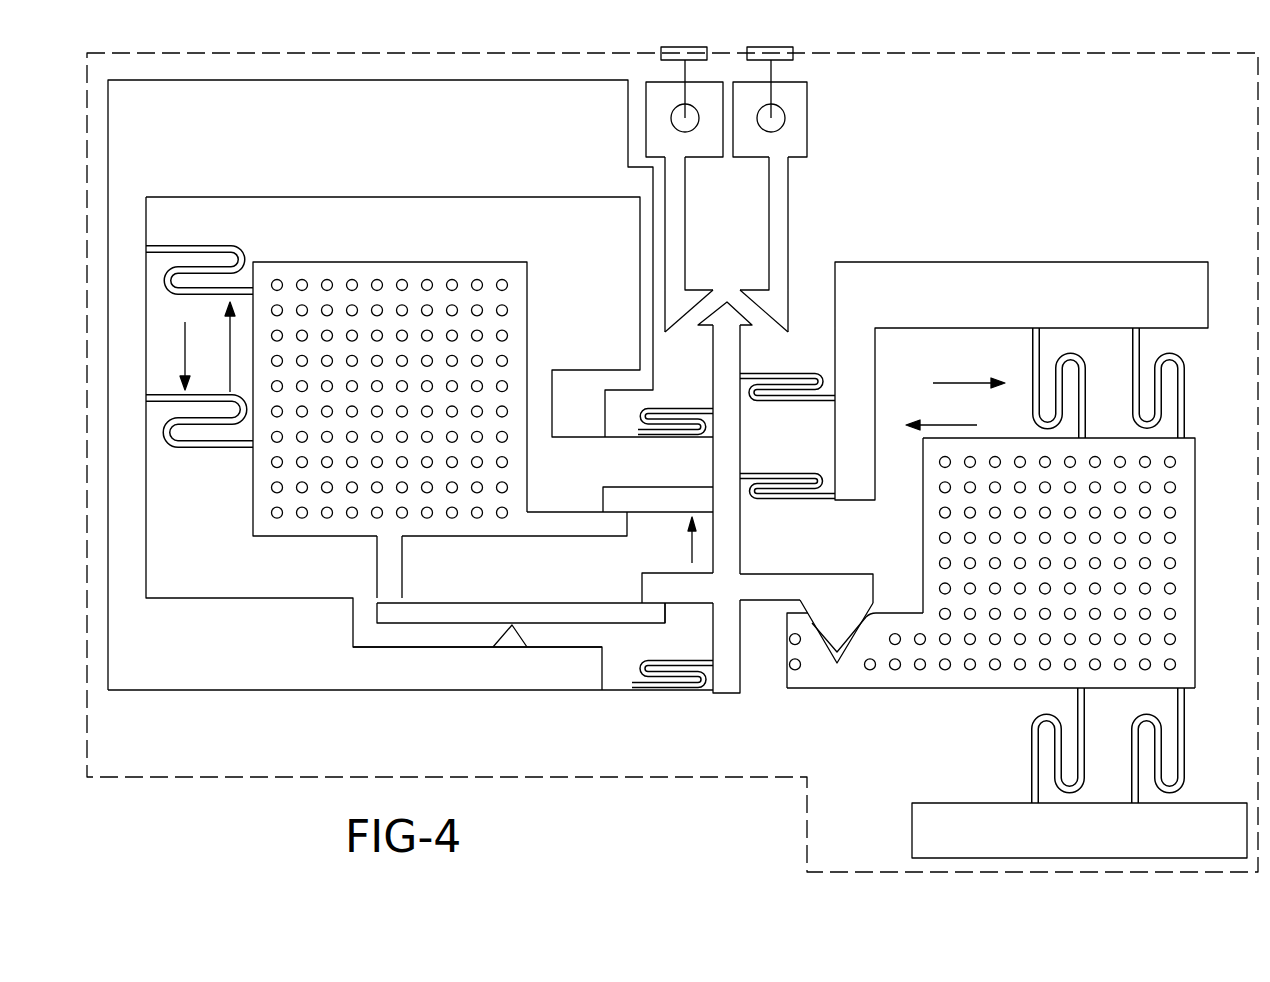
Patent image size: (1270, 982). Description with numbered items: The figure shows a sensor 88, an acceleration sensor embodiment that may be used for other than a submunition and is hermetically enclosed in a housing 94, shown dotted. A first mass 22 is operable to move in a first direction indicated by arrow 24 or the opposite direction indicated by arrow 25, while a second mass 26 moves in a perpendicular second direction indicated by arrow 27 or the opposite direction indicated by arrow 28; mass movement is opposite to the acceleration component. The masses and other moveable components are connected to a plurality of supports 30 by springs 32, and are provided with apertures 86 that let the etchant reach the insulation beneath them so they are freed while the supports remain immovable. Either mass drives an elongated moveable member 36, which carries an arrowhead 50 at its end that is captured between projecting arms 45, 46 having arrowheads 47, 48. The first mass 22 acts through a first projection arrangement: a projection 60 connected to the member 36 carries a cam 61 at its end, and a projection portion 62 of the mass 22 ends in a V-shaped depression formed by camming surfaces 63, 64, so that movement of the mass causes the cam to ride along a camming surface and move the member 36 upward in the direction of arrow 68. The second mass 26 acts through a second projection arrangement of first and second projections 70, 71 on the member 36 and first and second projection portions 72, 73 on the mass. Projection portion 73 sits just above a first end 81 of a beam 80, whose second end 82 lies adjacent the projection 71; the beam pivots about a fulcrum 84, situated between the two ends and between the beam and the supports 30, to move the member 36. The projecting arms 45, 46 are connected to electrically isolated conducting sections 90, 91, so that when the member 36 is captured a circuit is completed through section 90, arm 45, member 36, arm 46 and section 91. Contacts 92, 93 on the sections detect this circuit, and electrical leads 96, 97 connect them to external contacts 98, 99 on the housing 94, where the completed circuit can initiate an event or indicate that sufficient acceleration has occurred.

The first mass 22 is at (1201, 549).
The arrow 24 is at (960, 382).
The arrow 25 is at (952, 423).
The second mass 26 is at (405, 258).
The arrow 27 is at (218, 348).
The arrow 28 is at (429, 443).
The supports 30 is at (357, 96).
The springs 32 is at (157, 245).
The elongated moveable member 36 is at (749, 534).
The projecting arm 45 is at (677, 197).
The projecting arm 46 is at (782, 202).
The arrowhead 47 is at (702, 290).
The arrowhead 48 is at (750, 290).
The arrowhead 50 is at (702, 325).
The projection 60 is at (768, 601).
The cam 61 is at (873, 603).
The projection portion 62 is at (858, 690).
The camming surface 63 is at (813, 625).
The camming surface 64 is at (868, 616).
The arrow 68 is at (690, 552).
The first projection 70 is at (630, 495).
The second projection 71 is at (643, 588).
The first projection portion 72 is at (583, 523).
The second projection portion 73 is at (382, 588).
The beam 80 is at (525, 610).
The first end 81 is at (402, 618).
The second end 82 is at (630, 620).
The fulcrum 84 is at (510, 637).
The apertures 86 is at (327, 285).
The sensor 88 is at (1092, 46).
The electrically conducting section 90 is at (662, 93).
The electrically conducting section 91 is at (793, 93).
The contact 92 is at (672, 125).
The contact 93 is at (780, 125).
The housing 94 is at (157, 51).
The electrical lead 96 is at (683, 78).
The electrical lead 97 is at (773, 78).
The external contact 98 is at (685, 47).
The external contact 99 is at (772, 47).